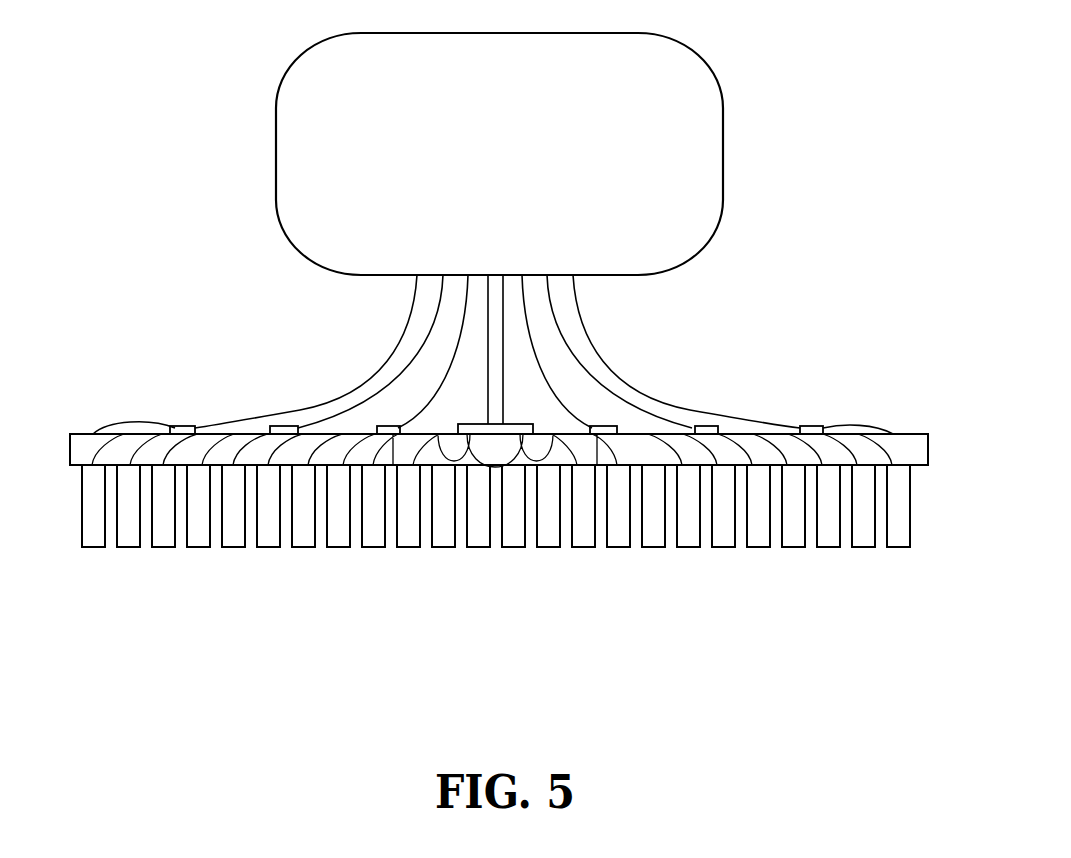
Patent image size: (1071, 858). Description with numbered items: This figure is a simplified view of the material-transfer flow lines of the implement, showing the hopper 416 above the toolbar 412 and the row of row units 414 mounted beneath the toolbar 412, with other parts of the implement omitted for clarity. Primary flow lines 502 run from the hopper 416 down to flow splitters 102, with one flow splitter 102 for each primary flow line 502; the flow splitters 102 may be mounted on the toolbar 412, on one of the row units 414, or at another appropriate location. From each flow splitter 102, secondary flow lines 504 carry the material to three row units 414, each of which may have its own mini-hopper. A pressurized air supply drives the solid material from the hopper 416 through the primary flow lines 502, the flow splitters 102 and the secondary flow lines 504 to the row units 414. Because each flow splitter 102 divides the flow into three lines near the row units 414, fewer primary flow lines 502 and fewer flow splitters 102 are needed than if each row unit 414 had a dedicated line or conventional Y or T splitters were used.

The hopper 416 is at (700, 104).
The toolbar 412 is at (82, 456).
The row units 414 is at (97, 548).
The flow splitter 102 is at (185, 427).
The primary flow lines 502 is at (400, 380).
The secondary flow lines 504 is at (130, 426).